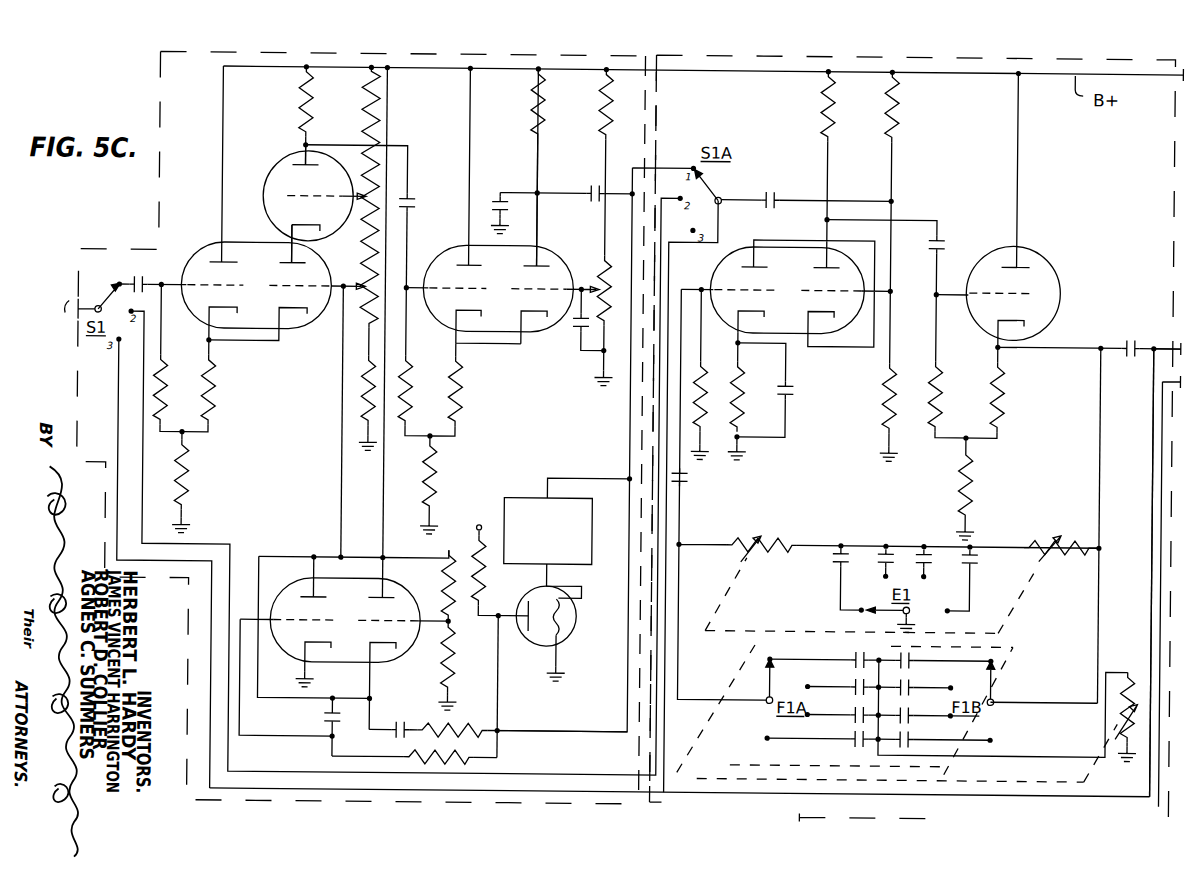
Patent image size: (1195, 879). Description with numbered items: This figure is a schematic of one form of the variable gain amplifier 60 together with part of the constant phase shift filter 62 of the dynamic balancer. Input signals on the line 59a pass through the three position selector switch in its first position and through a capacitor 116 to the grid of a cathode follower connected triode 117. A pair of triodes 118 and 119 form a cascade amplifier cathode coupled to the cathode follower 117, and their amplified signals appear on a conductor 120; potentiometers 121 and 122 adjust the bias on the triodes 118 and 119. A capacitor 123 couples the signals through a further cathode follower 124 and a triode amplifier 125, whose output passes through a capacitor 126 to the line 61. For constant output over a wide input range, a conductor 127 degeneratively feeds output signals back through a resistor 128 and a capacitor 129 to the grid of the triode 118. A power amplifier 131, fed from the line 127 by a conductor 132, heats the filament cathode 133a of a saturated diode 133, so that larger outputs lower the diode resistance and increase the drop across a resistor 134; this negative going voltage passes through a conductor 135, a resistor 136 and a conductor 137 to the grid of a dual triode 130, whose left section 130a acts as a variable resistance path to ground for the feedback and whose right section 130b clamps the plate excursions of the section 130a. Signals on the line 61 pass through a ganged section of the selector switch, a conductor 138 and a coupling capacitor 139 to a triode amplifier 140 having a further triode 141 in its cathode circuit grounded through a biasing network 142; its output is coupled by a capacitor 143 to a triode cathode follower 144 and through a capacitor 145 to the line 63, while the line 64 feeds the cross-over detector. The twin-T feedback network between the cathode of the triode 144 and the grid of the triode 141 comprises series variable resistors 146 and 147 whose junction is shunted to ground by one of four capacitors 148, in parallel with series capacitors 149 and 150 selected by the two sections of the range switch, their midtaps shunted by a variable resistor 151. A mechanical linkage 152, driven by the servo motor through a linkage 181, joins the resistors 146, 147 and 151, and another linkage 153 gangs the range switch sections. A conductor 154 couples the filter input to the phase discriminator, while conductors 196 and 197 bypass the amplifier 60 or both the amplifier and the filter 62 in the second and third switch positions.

The variable gain amplifier 60 is at (155, 88).
The line 61 is at (650, 170).
The constant phase shift filter 62 is at (1146, 818).
The line 63 is at (1167, 336).
The line 64 is at (1153, 440).
The line 59a is at (75, 310).
The capacitor 116 is at (135, 283).
The cathode follower connected triode 117 is at (188, 259).
The triode 118 is at (332, 278).
The triode 119 is at (264, 176).
The conductor 120 is at (397, 147).
The potentiometer 121 is at (342, 327).
The potentiometer 122 is at (368, 192).
The capacitor 123 is at (410, 207).
The cathode follower 124 is at (432, 261).
The triode amplifier 125 is at (578, 252).
The capacitor 126 is at (596, 192).
The conductor 127 is at (628, 410).
The resistor 128 is at (473, 726).
The capacitor 129 is at (398, 724).
The dual triode 130 is at (325, 670).
The left-hand section of dual triode 130a is at (280, 590).
The right-hand section of dual triode 130b is at (392, 654).
The power amplifier 131 is at (516, 495).
The conductor 132 is at (598, 473).
The saturated diode 133 is at (568, 630).
The filament cathode 133a is at (566, 612).
The resistor 134 is at (488, 570).
The conductor 135 is at (500, 712).
The resistor 136 is at (465, 757).
The conductor 137 is at (262, 741).
The conductor 138 is at (740, 194).
The coupling capacitor 139 is at (786, 199).
The triode amplifier 140 is at (948, 213).
The triode 141 is at (716, 276).
The biasing network 142 is at (776, 415).
The capacitor 143 is at (940, 241).
The triode cathode follower 144 is at (968, 328).
The capacitor 145 is at (1123, 337).
The variable resistor 146 is at (1045, 530).
The variable resistor 147 is at (772, 540).
The capacitors 148 is at (979, 575).
The capacitors 149 is at (858, 651).
The capacitors 150 is at (915, 660).
The variable resistor 151 is at (1139, 728).
The mechanical linkage 152 is at (740, 787).
The linkage 153 is at (1007, 642).
The conductor 154 is at (663, 820).
The mechanical linkage 181 is at (945, 815).
The conductor 196 is at (146, 475).
The conductor 197 is at (128, 433).